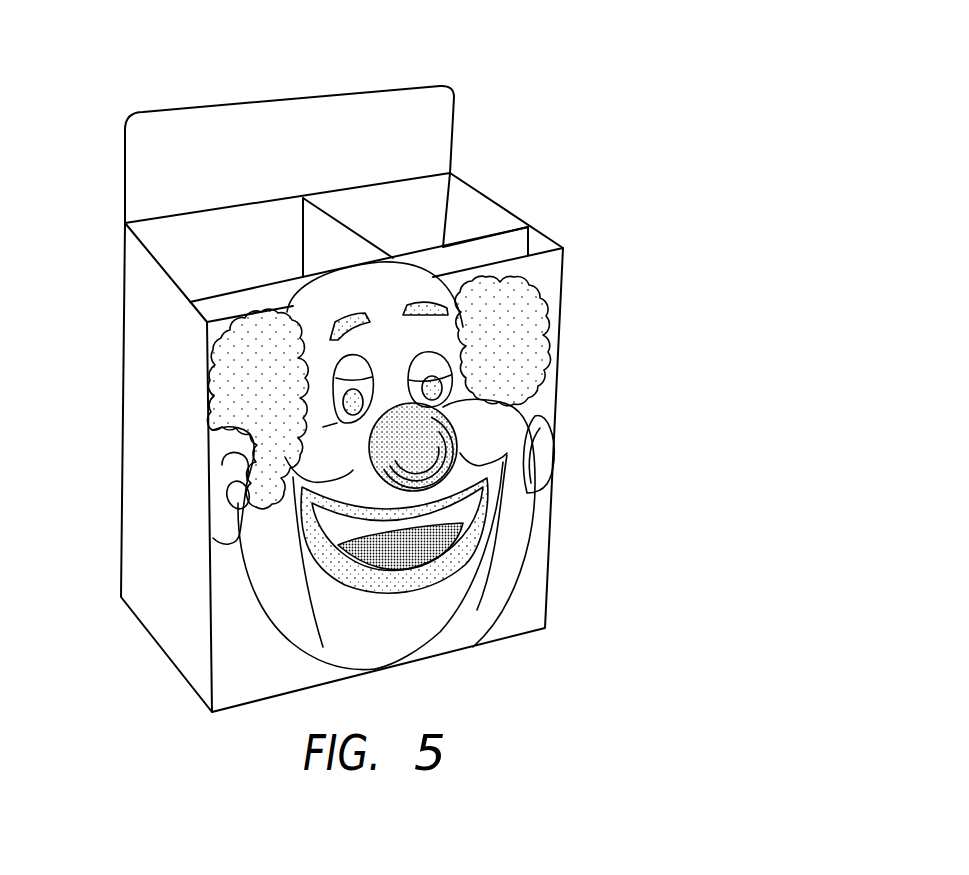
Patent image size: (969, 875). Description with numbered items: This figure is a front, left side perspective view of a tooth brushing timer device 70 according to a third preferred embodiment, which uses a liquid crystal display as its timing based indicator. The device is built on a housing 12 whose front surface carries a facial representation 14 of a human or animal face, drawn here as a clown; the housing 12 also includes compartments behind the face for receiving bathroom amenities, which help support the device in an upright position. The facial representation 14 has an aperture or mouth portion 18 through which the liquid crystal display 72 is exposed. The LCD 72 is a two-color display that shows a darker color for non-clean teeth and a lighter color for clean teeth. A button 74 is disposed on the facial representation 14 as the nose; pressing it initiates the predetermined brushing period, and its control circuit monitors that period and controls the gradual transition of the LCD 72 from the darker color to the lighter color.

The tooth brushing timer device 70 is at (523, 73).
The housing 12 is at (152, 350).
The facial representation 14 is at (536, 512).
The mouth portion 18 is at (417, 590).
The liquid crystal display 72 is at (345, 538).
The button 74 is at (417, 440).